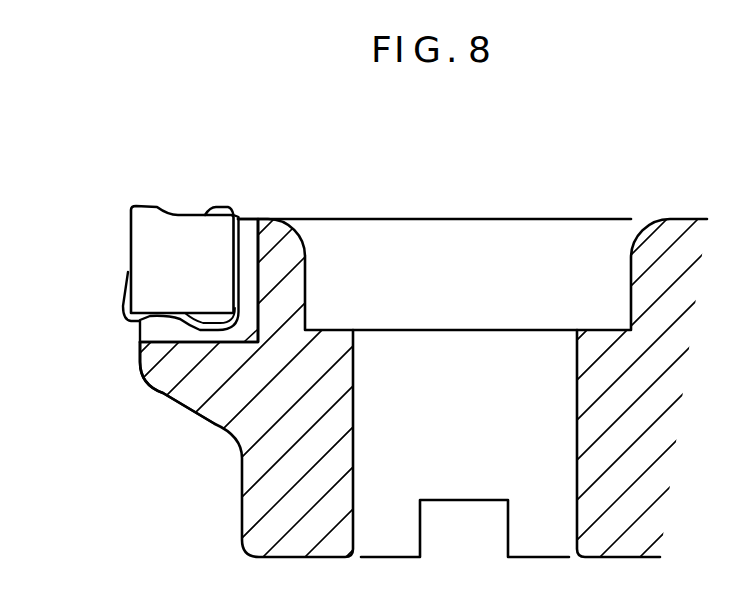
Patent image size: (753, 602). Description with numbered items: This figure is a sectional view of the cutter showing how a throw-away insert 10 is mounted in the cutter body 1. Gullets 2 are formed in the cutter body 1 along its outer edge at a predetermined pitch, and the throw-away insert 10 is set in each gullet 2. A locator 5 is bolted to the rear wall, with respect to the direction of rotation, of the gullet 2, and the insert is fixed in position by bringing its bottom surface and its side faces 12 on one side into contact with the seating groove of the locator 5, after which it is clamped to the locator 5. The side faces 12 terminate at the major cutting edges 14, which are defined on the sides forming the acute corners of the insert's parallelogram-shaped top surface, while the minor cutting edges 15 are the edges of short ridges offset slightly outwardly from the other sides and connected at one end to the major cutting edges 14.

The cutter body 1 is at (260, 482).
The gullet 2 is at (177, 345).
The locator 5 is at (244, 224).
The throw-away insert 10 is at (134, 235).
The side face 12 is at (128, 322).
The major cutting edge 14 is at (130, 229).
The minor cutting edge 15 is at (142, 201).